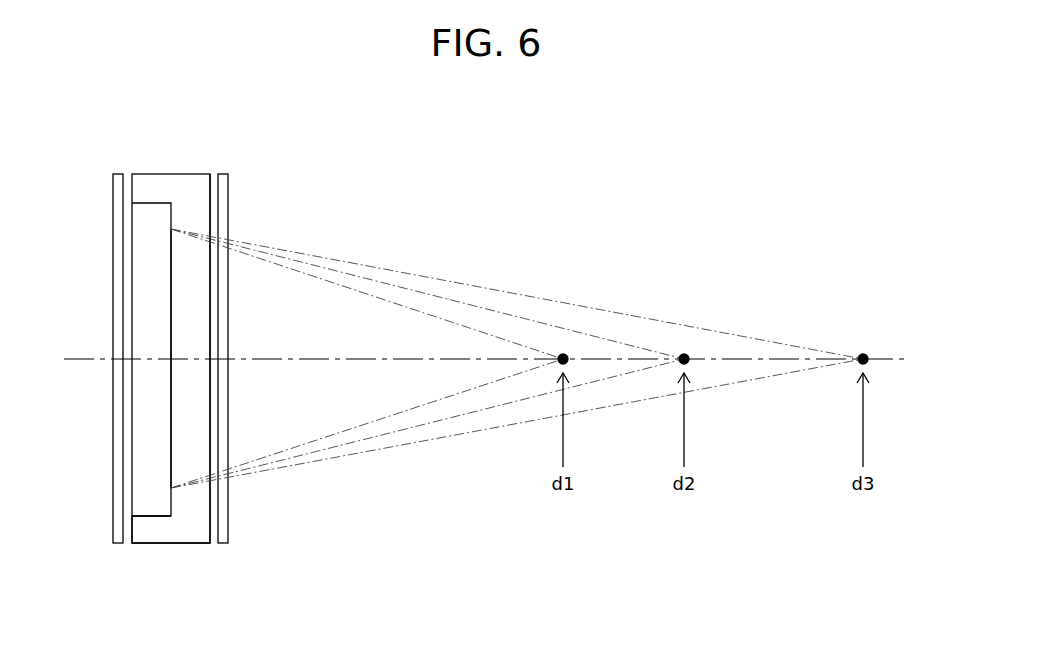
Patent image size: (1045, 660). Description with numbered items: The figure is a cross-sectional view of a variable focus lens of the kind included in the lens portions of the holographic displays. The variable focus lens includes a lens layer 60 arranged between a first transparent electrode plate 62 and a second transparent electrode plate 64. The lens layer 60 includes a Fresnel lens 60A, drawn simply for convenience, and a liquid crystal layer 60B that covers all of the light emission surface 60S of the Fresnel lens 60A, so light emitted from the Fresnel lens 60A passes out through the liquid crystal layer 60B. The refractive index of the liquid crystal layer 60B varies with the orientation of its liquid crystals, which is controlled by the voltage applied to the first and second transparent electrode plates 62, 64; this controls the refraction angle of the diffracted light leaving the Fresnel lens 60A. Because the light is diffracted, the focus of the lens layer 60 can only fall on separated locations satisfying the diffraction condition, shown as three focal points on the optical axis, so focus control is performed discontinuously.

The lens layer 60 is at (175, 160).
The first transparent electrode plate 62 is at (118, 172).
The second transparent electrode plate 64 is at (224, 172).
The Fresnel lens 60A is at (150, 512).
The liquid crystal layer 60B is at (187, 535).
The light emission surface 60S is at (181, 324).